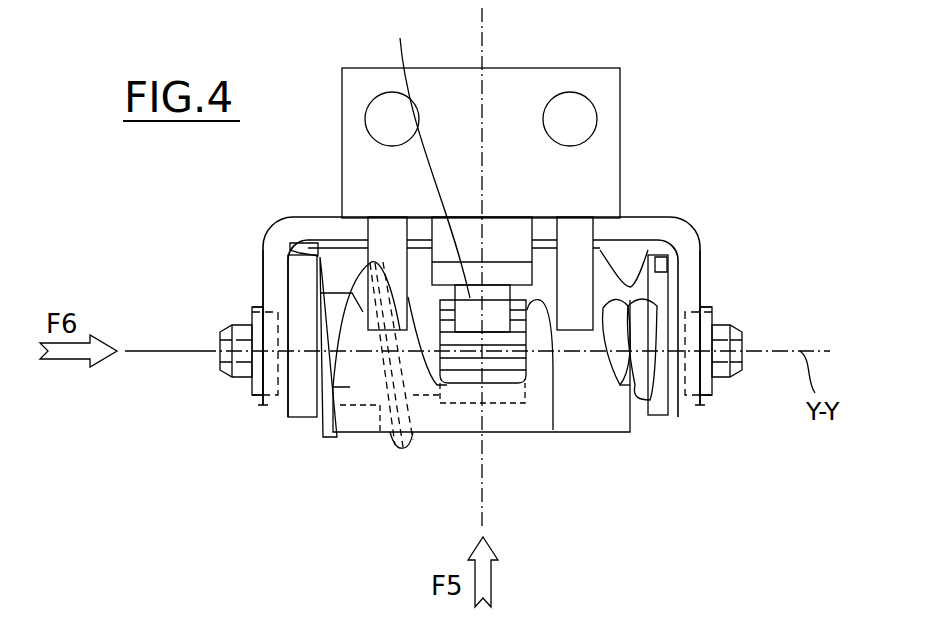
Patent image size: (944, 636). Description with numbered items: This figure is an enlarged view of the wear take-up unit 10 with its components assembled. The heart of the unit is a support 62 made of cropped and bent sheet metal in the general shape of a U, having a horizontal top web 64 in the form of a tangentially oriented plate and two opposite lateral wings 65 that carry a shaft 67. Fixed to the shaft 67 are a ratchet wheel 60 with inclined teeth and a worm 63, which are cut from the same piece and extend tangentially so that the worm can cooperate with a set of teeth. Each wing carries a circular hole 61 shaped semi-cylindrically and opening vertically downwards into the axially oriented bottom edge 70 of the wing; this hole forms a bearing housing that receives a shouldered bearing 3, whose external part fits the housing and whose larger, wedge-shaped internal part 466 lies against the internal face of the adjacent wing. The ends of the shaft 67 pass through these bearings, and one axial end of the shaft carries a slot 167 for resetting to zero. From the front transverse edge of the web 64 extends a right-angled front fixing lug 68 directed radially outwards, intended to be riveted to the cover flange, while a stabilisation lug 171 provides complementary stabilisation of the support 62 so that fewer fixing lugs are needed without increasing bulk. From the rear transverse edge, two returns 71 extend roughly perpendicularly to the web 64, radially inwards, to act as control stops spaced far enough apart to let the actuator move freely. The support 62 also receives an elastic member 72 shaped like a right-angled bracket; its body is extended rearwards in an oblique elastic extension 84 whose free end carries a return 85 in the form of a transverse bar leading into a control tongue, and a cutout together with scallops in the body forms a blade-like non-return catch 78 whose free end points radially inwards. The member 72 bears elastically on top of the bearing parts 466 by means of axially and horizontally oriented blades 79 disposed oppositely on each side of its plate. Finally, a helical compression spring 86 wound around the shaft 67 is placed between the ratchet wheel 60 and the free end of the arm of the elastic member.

The unit 10 is at (730, 80).
The bearing 3 is at (248, 403).
The ratchet wheel 60 is at (508, 387).
The circular hole 61 is at (252, 312).
The support 62 is at (660, 207).
The worm 63 is at (393, 452).
The top web 64 is at (423, 151).
The lateral wing 65 is at (268, 292).
The shaft 67 is at (745, 341).
The front fixing lug 68 is at (622, 95).
The bottom edge 70 is at (277, 405).
The return 71 is at (385, 236).
The elastic member 72 is at (617, 268).
The non-return catch 78 is at (500, 255).
The blade 79 is at (333, 240).
The oblique extension 84 is at (572, 396).
The return 85 is at (437, 434).
The helical compression spring 86 is at (538, 333).
The slot 167 is at (218, 340).
The stabilisation lug 171 is at (503, 242).
The internal part 466 is at (307, 420).